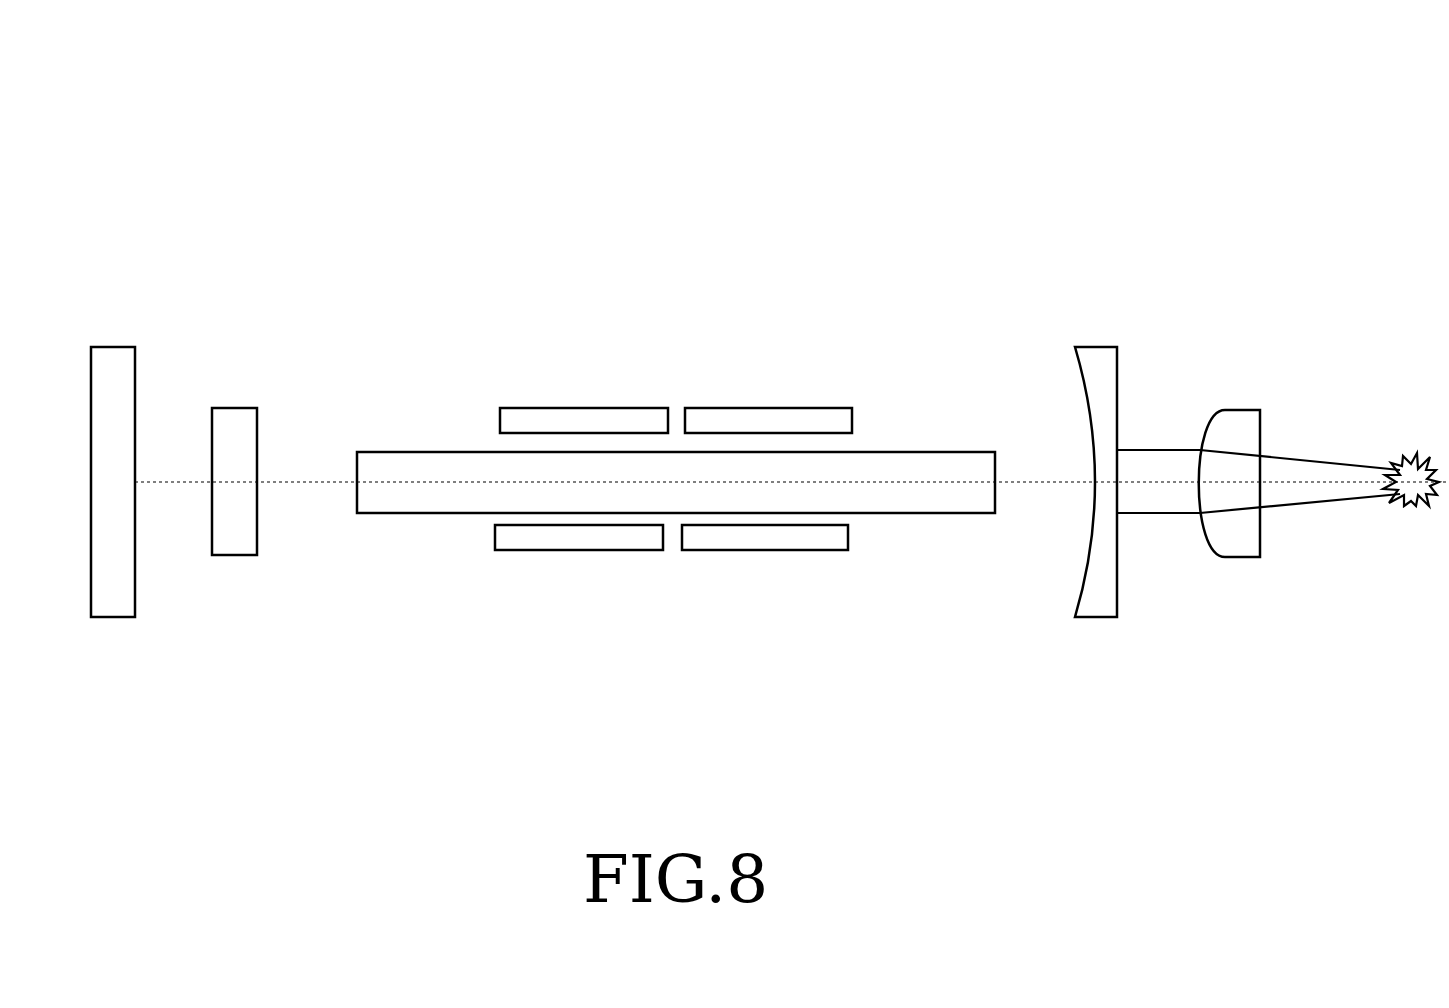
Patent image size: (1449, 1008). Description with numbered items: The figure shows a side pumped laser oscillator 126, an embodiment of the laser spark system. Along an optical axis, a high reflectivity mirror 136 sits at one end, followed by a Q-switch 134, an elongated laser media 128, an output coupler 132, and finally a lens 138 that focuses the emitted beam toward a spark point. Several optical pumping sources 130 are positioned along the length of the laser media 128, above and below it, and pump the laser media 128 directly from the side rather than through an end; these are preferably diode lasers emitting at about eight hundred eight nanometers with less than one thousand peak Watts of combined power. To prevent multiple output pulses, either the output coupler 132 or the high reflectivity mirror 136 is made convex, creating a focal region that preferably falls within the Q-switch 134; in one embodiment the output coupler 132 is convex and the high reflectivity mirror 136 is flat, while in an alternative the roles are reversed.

The side pumped laser oscillator 126 is at (728, 100).
The laser media 128 is at (914, 495).
The optical pumping sources 130 is at (577, 418).
The output coupler 132 is at (1093, 382).
The Q-switch 134 is at (238, 465).
The high reflectivity mirror 136 is at (112, 385).
The lens 138 is at (1242, 432).